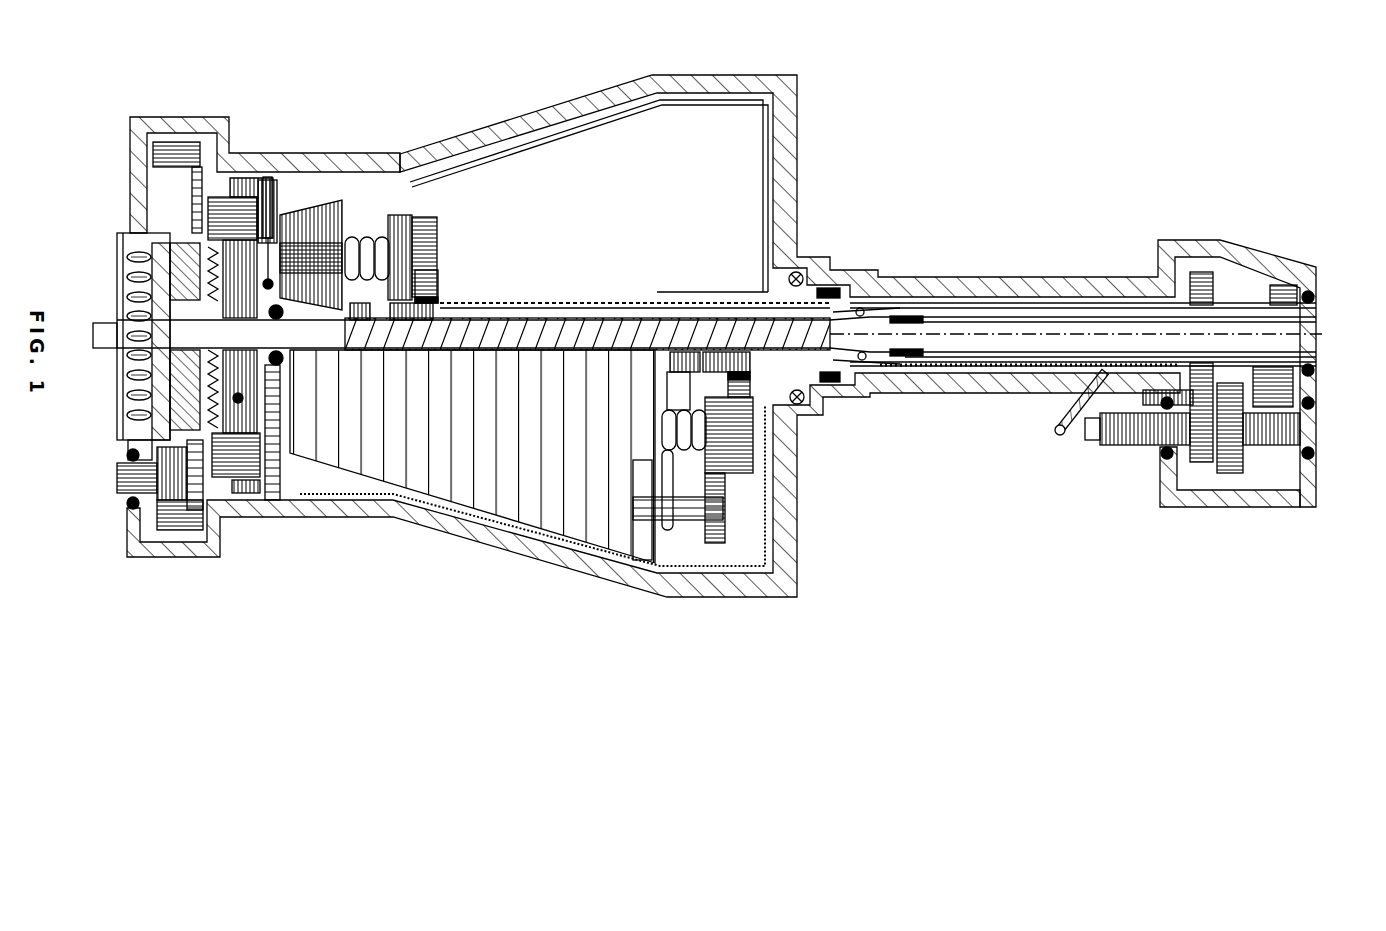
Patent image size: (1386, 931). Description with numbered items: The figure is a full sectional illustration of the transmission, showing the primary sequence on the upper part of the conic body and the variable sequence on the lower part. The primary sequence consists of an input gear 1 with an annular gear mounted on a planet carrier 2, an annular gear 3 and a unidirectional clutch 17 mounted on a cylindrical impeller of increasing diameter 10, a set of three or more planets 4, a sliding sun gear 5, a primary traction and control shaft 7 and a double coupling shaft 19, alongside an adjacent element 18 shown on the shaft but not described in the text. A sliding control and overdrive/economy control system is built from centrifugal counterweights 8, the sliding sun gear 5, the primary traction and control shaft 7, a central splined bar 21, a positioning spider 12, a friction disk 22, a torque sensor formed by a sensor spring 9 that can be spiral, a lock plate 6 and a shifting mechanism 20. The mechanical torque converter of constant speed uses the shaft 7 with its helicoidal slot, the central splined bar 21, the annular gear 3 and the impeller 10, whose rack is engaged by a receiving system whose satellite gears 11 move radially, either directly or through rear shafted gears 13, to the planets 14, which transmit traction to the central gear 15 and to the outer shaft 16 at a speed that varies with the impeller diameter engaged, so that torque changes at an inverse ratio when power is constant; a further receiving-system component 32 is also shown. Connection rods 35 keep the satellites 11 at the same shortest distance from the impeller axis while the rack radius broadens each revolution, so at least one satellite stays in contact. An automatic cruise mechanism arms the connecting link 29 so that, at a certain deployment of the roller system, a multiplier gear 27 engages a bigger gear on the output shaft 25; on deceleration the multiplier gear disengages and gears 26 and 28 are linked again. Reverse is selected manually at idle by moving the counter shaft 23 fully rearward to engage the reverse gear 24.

The input gear 1 is at (138, 540).
The planet carrier 2 is at (166, 543).
The annular gear 3 is at (239, 498).
The planets 4 is at (246, 539).
The sliding sun gear 5 is at (707, 471).
The lock plate 6 is at (191, 526).
The primary traction and control shaft 7 is at (472, 490).
The centrifugal counterweights 8 is at (237, 334).
The sensor spring 9 is at (114, 229).
The cylindrical impeller of increasing diameter 10 is at (721, 327).
The satellite gears 11 is at (278, 145).
The positioning spider 12 is at (311, 189).
The rear shafted gears 13 is at (349, 168).
The planets 14 is at (369, 170).
The central gear 15 is at (418, 175).
The outer shaft 16 is at (440, 176).
The unidirectional clutch 17 is at (812, 267).
The pin 18 is at (875, 240).
The double coupling shaft 19 is at (1074, 256).
The shifting mechanism 20 is at (251, 153).
The central splined bar 21 is at (122, 417).
The friction disk 22 is at (180, 586).
The counter shaft 23 is at (1137, 462).
The reverse gear 24 is at (1290, 473).
The output shaft 25 is at (1210, 243).
The gear 26 is at (1277, 279).
The multiplier gear 27 is at (1185, 463).
The gear 28 is at (1266, 492).
The connecting link 29 is at (1060, 425).
The receiving system component 32 is at (587, 263).
The connection rods 35 is at (654, 313).